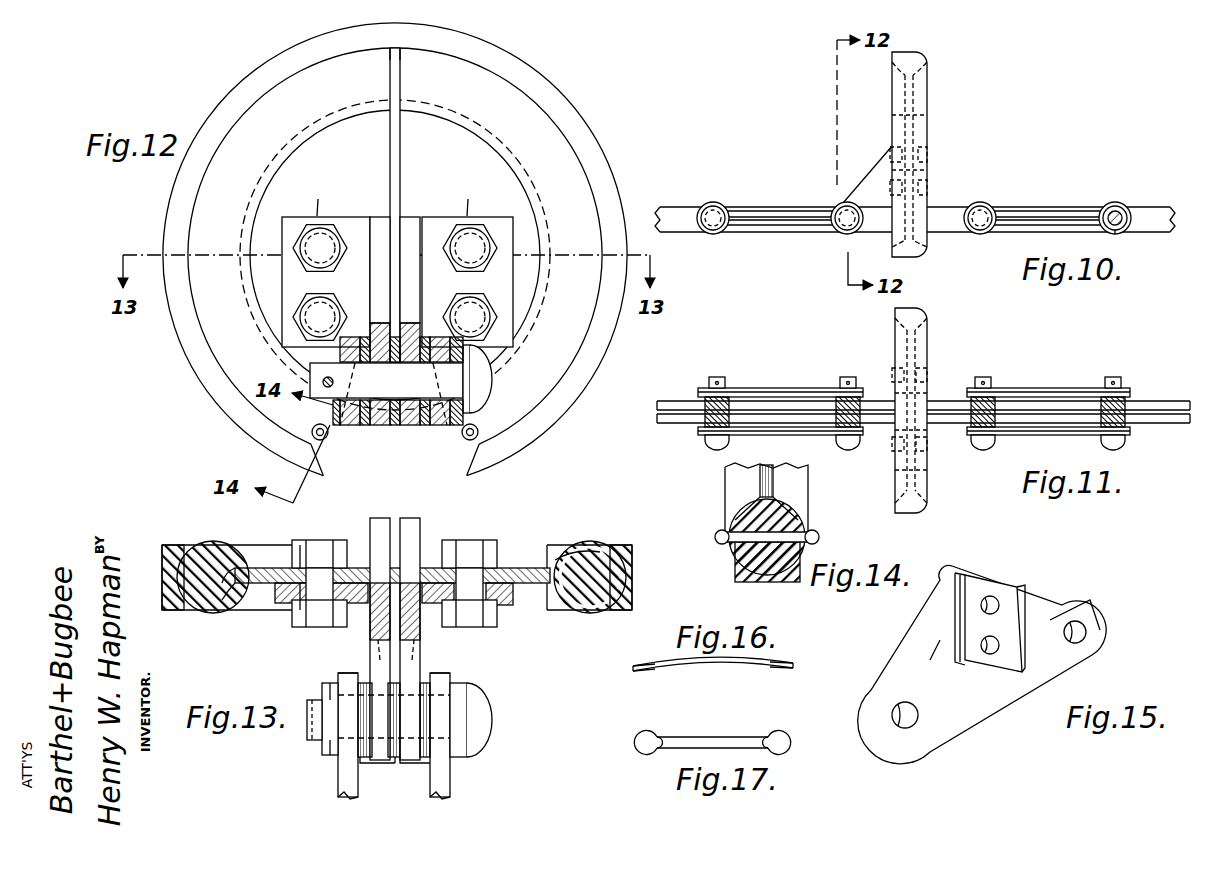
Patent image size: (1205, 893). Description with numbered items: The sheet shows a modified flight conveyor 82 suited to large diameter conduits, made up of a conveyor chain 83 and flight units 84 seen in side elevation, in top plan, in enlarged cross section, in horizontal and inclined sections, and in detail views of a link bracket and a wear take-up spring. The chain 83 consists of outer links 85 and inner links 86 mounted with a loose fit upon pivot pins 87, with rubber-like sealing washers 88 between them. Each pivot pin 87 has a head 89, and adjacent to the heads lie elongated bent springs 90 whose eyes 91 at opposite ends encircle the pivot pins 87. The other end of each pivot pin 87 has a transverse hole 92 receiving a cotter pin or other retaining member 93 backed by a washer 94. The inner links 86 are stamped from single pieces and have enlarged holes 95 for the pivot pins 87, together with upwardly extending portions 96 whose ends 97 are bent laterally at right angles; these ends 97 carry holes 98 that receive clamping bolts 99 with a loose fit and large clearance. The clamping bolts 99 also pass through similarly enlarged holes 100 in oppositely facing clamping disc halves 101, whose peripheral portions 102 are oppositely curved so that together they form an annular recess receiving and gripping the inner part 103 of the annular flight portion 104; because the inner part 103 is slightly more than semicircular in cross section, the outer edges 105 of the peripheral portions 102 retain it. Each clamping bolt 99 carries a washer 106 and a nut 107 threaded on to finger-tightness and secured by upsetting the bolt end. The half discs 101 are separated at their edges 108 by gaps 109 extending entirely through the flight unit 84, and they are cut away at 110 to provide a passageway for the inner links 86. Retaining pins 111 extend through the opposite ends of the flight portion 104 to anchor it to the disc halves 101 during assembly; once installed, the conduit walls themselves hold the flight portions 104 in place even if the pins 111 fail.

In FIG. 10, the modified conveyor 82 is at (942, 197).
In FIG. 11, the modified conveyor 82 is at (960, 375).
In FIG. 11, the conveyor chain 83 is at (1027, 385).
In FIG. 12, the flight unit 84 is at (609, 161).
In FIG. 13, the flight unit 84 is at (636, 547).
In FIG. 11, the flight unit 84 is at (930, 350).
In FIG. 12, the outer link 85 is at (344, 427).
In FIG. 13, the outer link 85 is at (440, 782).
In FIG. 10, the outer link 85 is at (766, 210).
In FIG. 11, the outer link 85 is at (785, 388).
In FIG. 13, the inner link 86 is at (370, 648).
In FIG. 10, the inner link 86 is at (1165, 242).
In FIG. 11, the inner link 86 is at (676, 396).
In FIG. 15, the inner link 86 is at (977, 700).
In FIG. 13, the pivot pin 87 is at (307, 718).
In FIG. 10, the pivot pin 87 is at (1120, 233).
In FIG. 11, the pivot pin 87 is at (717, 377).
In FIG. 12, the sealing washer 88 is at (366, 428).
In FIG. 13, the sealing washer 88 is at (394, 732).
In FIG. 11, the sealing washer 88 is at (730, 411).
In FIG. 10, the head 89 is at (713, 234).
In FIG. 11, the head 89 is at (713, 450).
In FIG. 10, the bent spring 90 is at (768, 226).
In FIG. 11, the bent spring 90 is at (760, 435).
In FIG. 16, the bent spring 90 is at (720, 670).
In FIG. 17, the bent spring 90 is at (712, 737).
In FIG. 10, the eye 91 is at (1122, 209).
In FIG. 16, the eye 91 is at (783, 663).
In FIG. 17, the eye 91 is at (634, 744).
In FIG. 13, the transverse hole 92 is at (316, 740).
In FIG. 12, the retaining member 93 is at (322, 383).
In FIG. 13, the retaining member 93 is at (325, 690).
In FIG. 12, the washer 94 is at (340, 352).
In FIG. 13, the washer 94 is at (332, 684).
In FIG. 13, the enlarged hole 95 is at (378, 660).
In FIG. 15, the enlarged hole 95 is at (900, 740).
In FIG. 12, the upwardly extending portion 96 is at (373, 325).
In FIG. 13, the upwardly extending portion 96 is at (372, 628).
In FIG. 10, the upwardly extending portion 96 is at (892, 172).
In FIG. 11, the upwardly extending portion 96 is at (895, 401).
In FIG. 15, the upwardly extending portion 96 is at (910, 650).
In FIG. 12, the bent end 97 is at (288, 226).
In FIG. 13, the bent end 97 is at (294, 610).
In FIG. 15, the bent end 97 is at (1008, 582).
In FIG. 13, the hole 98 is at (512, 606).
In FIG. 15, the hole 98 is at (983, 643).
In FIG. 12, the clamping bolt 99 is at (318, 228).
In FIG. 13, the clamping bolt 99 is at (318, 628).
In FIG. 10, the clamping bolt 99 is at (895, 163).
In FIG. 11, the clamping bolt 99 is at (892, 372).
In FIG. 13, the enlarged hole 100 is at (508, 566).
In FIG. 12, the clamping disc half 101 is at (401, 198).
In FIG. 13, the clamping disc half 101 is at (250, 566).
In FIG. 10, the clamping disc half 101 is at (892, 115).
In FIG. 11, the clamping disc half 101 is at (895, 474).
In FIG. 14, the clamping disc half 101 is at (760, 478).
In FIG. 13, the peripheral portion 102 is at (582, 543).
In FIG. 13, the inner part 103 is at (593, 530).
In FIG. 12, the annular flight portion 104 is at (556, 113).
In FIG. 13, the annular flight portion 104 is at (639, 576).
In FIG. 10, the annular flight portion 104 is at (893, 62).
In FIG. 11, the annular flight portion 104 is at (912, 507).
In FIG. 14, the annular flight portion 104 is at (701, 524).
In FIG. 13, the outer edge 105 is at (185, 545).
In FIG. 13, the washer 106 is at (297, 540).
In FIG. 13, the nut 107 is at (318, 540).
In FIG. 12, the edge 108 is at (410, 137).
In FIG. 12, the gap 109 is at (401, 161).
In FIG. 12, the cut-away 110 is at (336, 428).
In FIG. 12, the retaining pin 111 is at (313, 432).
In FIG. 14, the retaining pin 111 is at (820, 537).